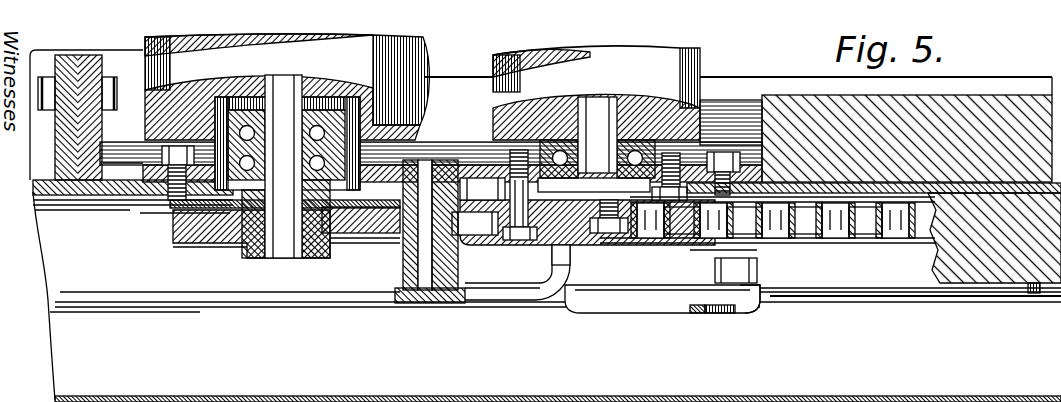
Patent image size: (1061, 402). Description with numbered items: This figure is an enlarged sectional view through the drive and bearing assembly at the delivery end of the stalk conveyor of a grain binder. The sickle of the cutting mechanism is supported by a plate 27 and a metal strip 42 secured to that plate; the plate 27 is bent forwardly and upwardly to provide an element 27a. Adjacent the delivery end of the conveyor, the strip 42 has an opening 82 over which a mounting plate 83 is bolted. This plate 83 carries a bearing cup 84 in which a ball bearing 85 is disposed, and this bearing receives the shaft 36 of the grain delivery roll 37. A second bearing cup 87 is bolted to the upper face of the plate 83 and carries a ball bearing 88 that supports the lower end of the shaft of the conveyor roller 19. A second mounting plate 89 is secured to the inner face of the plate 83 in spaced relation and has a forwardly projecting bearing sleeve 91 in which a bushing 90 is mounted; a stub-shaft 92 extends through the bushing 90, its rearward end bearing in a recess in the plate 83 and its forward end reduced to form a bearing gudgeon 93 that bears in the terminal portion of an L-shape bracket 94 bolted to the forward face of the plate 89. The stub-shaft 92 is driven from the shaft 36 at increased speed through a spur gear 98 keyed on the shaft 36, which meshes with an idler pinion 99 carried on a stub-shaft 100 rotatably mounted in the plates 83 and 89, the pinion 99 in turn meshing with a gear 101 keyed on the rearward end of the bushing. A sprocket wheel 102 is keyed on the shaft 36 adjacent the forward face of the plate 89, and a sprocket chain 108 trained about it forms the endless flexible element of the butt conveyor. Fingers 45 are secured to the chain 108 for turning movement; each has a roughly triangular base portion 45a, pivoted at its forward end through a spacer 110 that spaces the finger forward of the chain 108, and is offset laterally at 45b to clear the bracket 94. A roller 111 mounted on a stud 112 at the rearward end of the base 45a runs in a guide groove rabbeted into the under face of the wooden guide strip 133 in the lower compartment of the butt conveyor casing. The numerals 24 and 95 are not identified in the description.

The conveyor roller 19 is at (622, 62).
The frame block 24 is at (975, 102).
The plate 27 is at (776, 80).
The element 27a is at (60, 362).
The shaft 36 is at (277, 258).
The grain delivery roll 37 is at (426, 42).
The metal strip 42 is at (990, 185).
The fingers 45 is at (672, 313).
The base portion 45a is at (752, 298).
The lateral offset 45b is at (703, 314).
The opening 82 is at (175, 208).
The mounting plate 83 is at (452, 168).
The bearing cup 84 is at (225, 133).
The ball bearing 85 is at (286, 145).
The bearing cup 87 is at (657, 135).
The ball bearing 88 is at (693, 104).
The second mounting plate 89 is at (365, 235).
The bushing 90 is at (392, 236).
The bearing sleeve 91 is at (512, 242).
The stub-shaft 92 is at (400, 300).
The bearing gudgeon 93 is at (425, 305).
The L-shape bracket 94 is at (545, 301).
The flange 95 is at (455, 303).
The spur gear 98 is at (296, 258).
The idler pinion 99 is at (330, 250).
The stub-shaft 100 is at (357, 142).
The gear 101 is at (400, 170).
The sprocket wheel 102 is at (175, 228).
The sprocket chain 108 is at (880, 242).
The spacer 110 is at (556, 270).
The roller 111 is at (714, 268).
The stud 112 is at (745, 251).
The wooden guide strip 133 is at (960, 284).